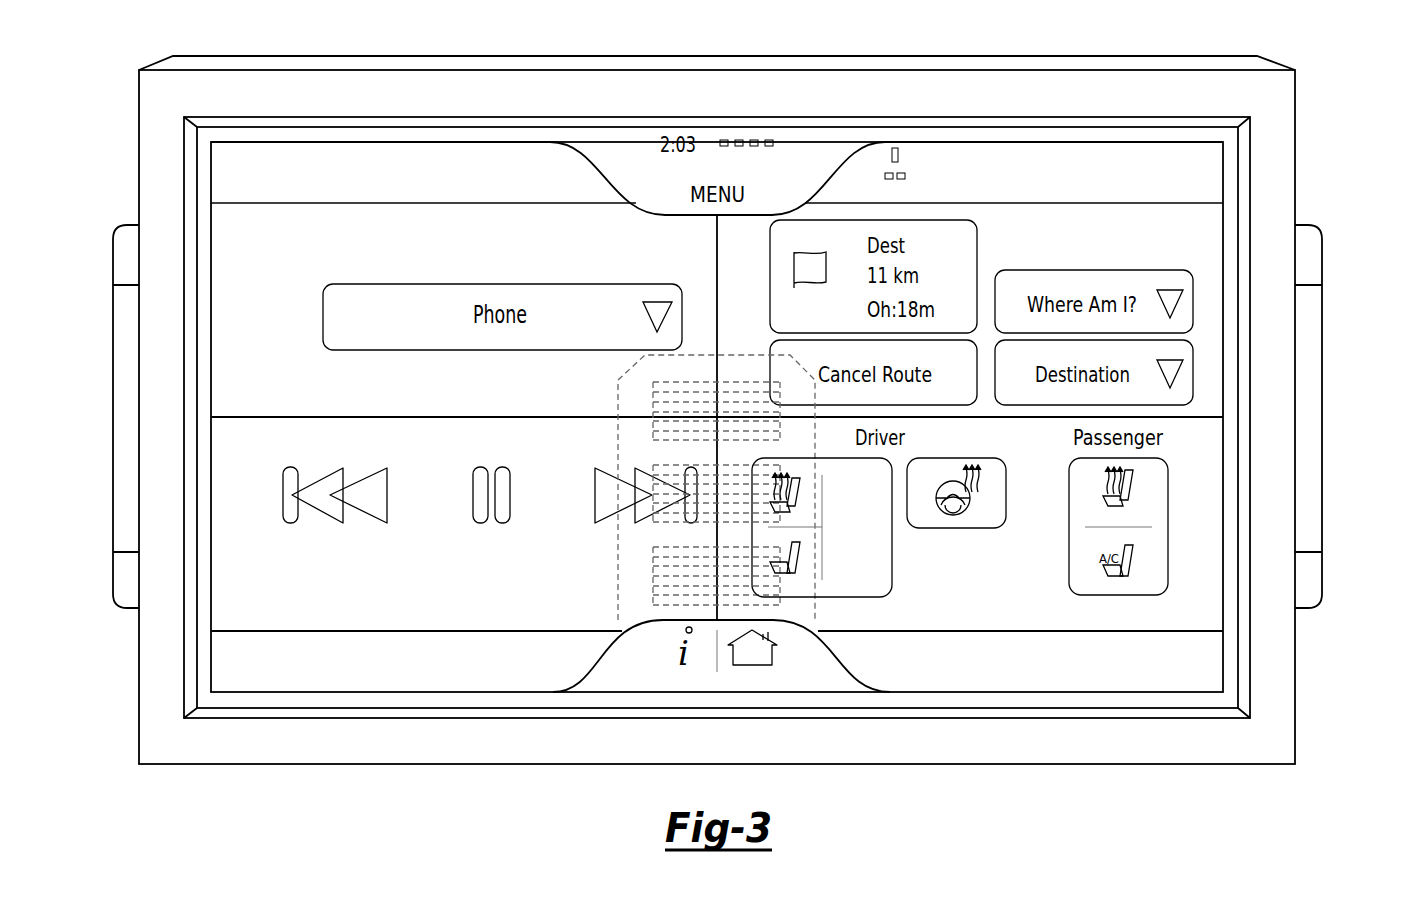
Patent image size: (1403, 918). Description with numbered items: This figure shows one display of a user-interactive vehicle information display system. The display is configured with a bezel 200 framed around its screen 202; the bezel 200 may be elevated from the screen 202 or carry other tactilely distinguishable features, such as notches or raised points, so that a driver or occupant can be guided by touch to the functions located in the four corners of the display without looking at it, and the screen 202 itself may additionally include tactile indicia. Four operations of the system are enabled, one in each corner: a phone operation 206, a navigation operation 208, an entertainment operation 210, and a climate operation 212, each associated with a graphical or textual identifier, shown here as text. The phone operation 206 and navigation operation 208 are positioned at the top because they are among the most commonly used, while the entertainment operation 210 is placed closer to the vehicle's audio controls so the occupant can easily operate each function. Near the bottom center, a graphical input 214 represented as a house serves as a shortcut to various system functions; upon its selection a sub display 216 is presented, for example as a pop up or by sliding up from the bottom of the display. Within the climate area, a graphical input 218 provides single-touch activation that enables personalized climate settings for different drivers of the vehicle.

The bezel 200 is at (1268, 322).
The screen 202 is at (1205, 407).
The phone operation 206 is at (235, 176).
The navigation operation 208 is at (1200, 176).
The entertainment operation 210 is at (275, 668).
The climate operation 212 is at (1123, 668).
The graphical input 214 is at (780, 667).
The sub display 216 is at (636, 583).
The graphical input 218 is at (866, 573).